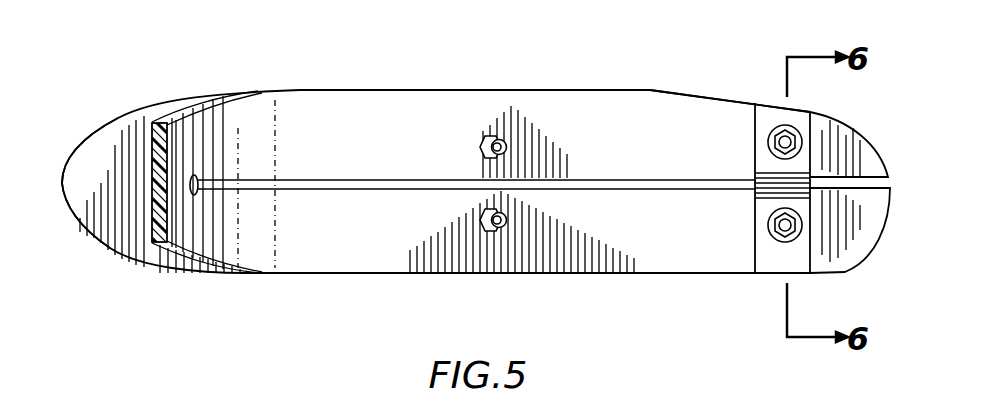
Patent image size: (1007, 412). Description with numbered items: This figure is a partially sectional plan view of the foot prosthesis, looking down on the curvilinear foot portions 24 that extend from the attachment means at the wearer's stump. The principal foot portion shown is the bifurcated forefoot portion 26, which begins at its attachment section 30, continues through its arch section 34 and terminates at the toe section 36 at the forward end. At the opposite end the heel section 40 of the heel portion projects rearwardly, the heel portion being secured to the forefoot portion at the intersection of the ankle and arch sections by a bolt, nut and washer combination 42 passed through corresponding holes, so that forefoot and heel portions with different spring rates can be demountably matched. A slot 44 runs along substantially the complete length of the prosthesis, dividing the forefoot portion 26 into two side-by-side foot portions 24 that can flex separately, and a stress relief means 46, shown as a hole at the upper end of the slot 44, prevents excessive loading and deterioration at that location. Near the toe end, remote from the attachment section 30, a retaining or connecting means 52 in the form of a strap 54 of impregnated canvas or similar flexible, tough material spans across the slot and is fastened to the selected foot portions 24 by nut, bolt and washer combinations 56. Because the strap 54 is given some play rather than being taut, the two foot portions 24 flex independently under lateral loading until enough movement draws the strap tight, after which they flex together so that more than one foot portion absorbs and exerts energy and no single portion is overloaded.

The curvilinear foot portion 24 is at (308, 86).
The bifurcated forefoot portion 26 is at (240, 130).
The attachment section 30 is at (160, 121).
The arch section 34 is at (470, 110).
The toe section 36 is at (865, 158).
The heel section 40 is at (105, 130).
The bolt, nut and washer combination 42 is at (502, 132).
The slot 44 is at (416, 185).
The stress relief means 46 is at (198, 193).
The retaining or connecting means 52 is at (740, 95).
The strap 54 is at (757, 244).
The nut, bolt and washer combination 56 is at (790, 132).